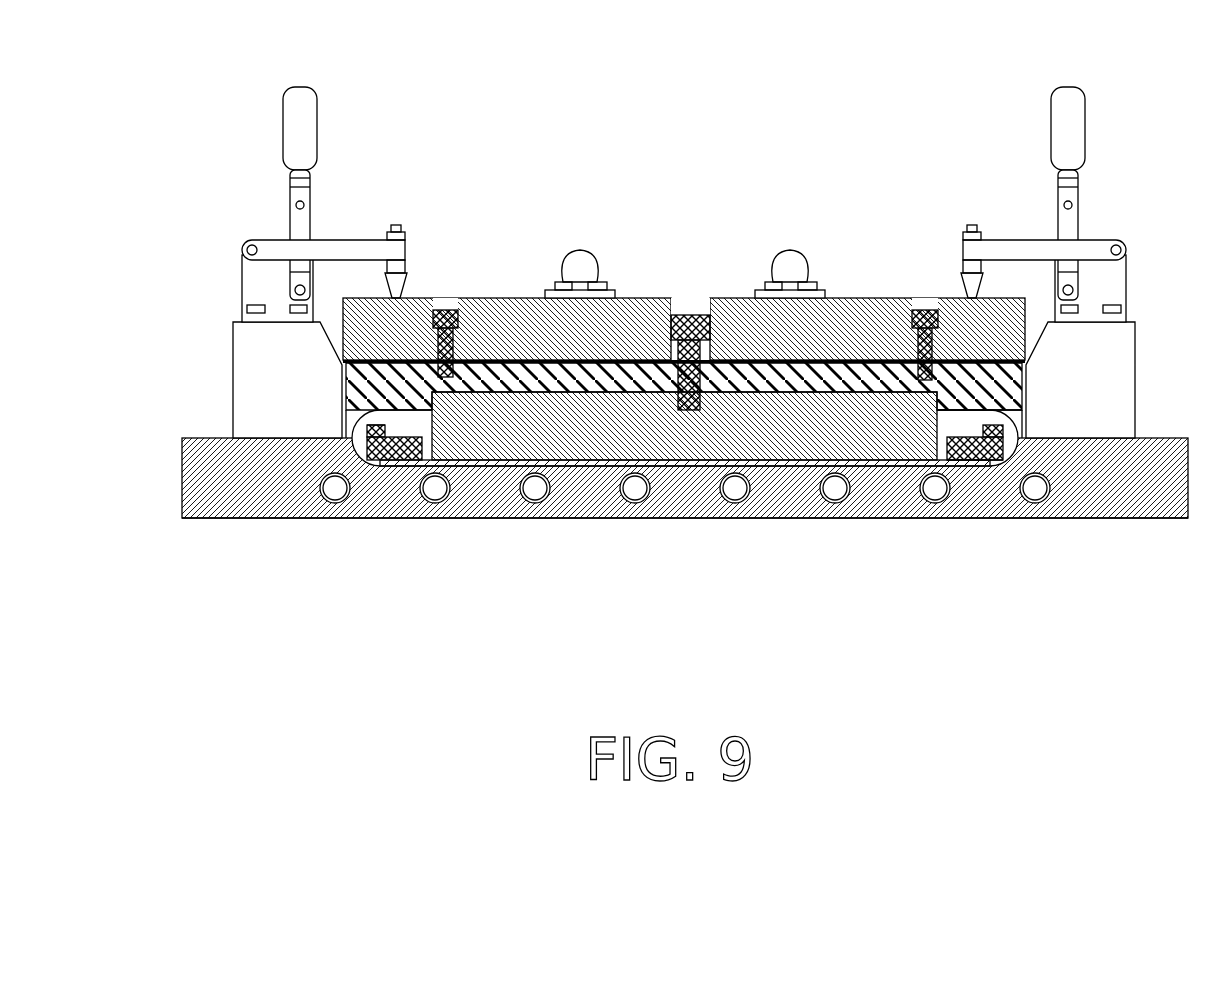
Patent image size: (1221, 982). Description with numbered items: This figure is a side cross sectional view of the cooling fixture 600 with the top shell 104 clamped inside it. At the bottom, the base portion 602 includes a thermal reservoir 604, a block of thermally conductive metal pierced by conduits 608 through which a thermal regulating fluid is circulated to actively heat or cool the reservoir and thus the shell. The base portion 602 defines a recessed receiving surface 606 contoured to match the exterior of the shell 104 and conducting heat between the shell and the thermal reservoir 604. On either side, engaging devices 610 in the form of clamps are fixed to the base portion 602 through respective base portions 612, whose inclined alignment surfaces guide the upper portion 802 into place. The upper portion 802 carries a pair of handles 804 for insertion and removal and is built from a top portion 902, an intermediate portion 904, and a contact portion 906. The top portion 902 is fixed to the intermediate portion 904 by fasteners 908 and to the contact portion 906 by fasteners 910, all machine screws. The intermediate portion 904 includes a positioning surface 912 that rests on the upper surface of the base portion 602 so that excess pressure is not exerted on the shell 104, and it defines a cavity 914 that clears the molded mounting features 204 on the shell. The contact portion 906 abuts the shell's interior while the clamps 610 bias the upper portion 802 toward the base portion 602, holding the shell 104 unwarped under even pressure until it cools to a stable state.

The cooling fixture 600 is at (726, 606).
The base portion 602 is at (272, 518).
The thermal reservoir 604 is at (195, 480).
The recessed receiving surface 606 is at (873, 437).
The conduits 608 is at (735, 492).
The engaging devices 610 is at (285, 246).
The base portions 612 is at (237, 343).
The top shell 104 is at (970, 462).
The molded mounting features 204 is at (370, 433).
The upper portion 802 is at (835, 320).
The handles 804 is at (578, 268).
The top portion 902 is at (502, 312).
The intermediate portion 904 is at (723, 373).
The contact portion 906 is at (600, 435).
The fasteners 908 is at (447, 312).
The fasteners 910 is at (688, 302).
The positioning surface 912 is at (355, 440).
The cavity 914 is at (985, 417).